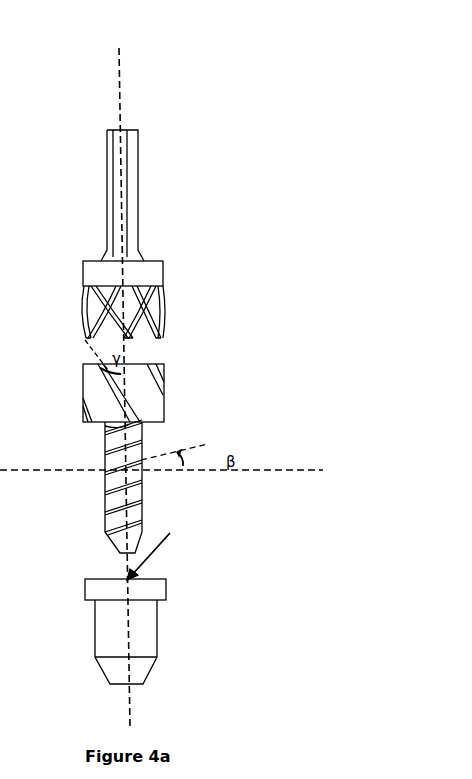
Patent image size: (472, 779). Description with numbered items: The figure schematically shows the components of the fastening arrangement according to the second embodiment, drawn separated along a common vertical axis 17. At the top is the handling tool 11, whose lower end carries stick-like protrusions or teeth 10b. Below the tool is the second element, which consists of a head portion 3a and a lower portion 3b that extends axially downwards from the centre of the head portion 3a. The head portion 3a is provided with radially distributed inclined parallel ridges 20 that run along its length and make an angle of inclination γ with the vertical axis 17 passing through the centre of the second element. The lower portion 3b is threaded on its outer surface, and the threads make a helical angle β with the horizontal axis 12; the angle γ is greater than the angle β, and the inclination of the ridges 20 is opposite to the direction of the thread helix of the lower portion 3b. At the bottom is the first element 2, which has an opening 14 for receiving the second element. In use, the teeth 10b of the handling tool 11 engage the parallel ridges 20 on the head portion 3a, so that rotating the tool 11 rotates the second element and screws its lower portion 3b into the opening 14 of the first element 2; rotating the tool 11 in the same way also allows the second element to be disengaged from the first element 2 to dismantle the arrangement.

The vertical axis 17 is at (119, 373).
The handling tool 11 is at (133, 152).
The teeth 10b is at (160, 310).
The inclined parallel ridges 20 is at (153, 383).
The head portion 3a is at (153, 409).
The lower portion 3b is at (137, 490).
The horizontal axis 12 is at (173, 471).
The opening 14 is at (162, 550).
The first element 2 is at (157, 619).